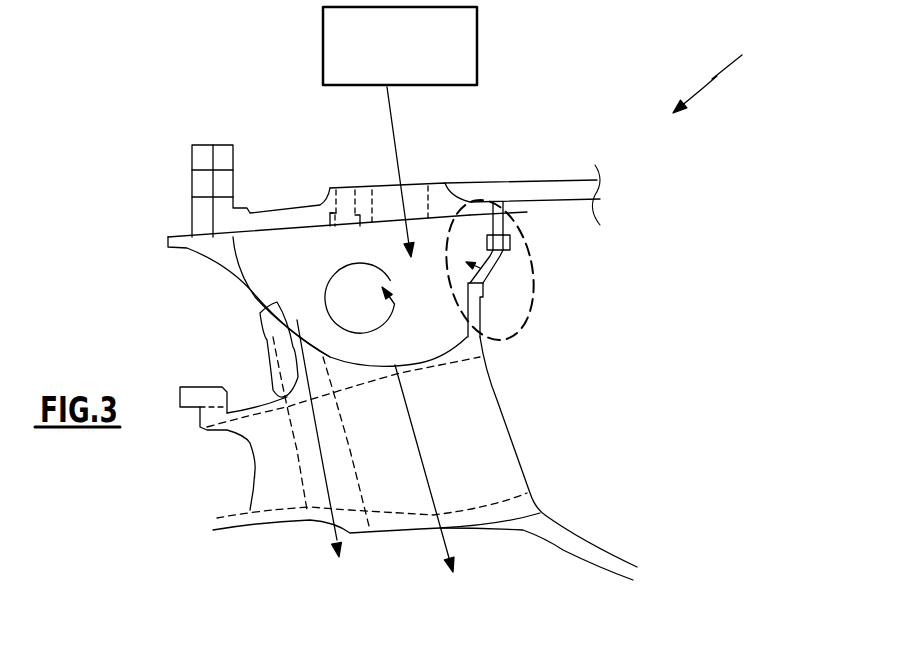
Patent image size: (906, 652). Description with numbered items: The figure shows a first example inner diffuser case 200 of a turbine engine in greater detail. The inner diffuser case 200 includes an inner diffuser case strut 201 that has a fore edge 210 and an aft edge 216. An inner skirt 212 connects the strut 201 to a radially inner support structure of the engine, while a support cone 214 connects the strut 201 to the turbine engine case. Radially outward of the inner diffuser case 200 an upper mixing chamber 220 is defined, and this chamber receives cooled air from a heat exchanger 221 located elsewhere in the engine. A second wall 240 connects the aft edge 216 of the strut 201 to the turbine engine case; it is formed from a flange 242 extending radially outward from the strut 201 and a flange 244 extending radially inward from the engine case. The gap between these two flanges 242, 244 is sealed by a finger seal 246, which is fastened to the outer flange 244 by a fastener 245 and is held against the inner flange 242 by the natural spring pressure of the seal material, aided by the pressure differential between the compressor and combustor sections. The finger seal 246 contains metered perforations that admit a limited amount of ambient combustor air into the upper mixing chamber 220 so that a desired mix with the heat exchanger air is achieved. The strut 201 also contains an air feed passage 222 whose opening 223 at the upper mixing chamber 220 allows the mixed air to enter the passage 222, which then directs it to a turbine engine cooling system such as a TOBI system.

The inner diffuser case 200 is at (731, 76).
The inner diffuser case strut 201 is at (463, 472).
The fore edge 210 is at (253, 463).
The inner skirt 212 is at (585, 553).
The support cone 214 is at (232, 280).
The aft edge 216 is at (498, 410).
The upper mixing chamber 220 is at (293, 258).
The heat exchanger 221 is at (480, 42).
The air feed passage 222 is at (347, 493).
The opening 223 is at (272, 305).
The second wall 240 is at (520, 302).
The flange 242 is at (477, 307).
The flange 244 is at (528, 193).
The fastener 245 is at (510, 240).
The finger seal 246 is at (505, 275).